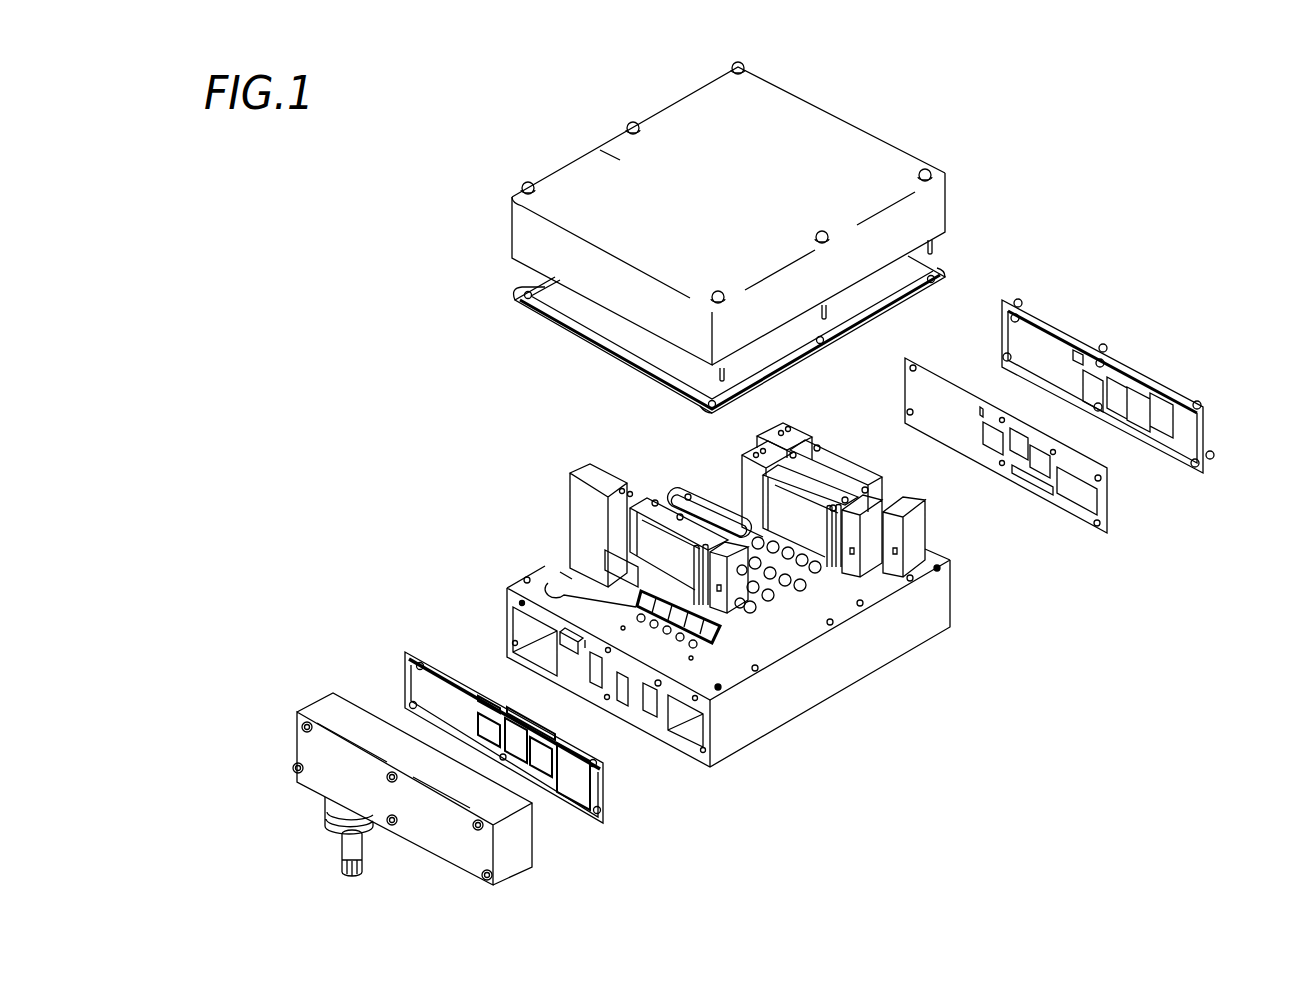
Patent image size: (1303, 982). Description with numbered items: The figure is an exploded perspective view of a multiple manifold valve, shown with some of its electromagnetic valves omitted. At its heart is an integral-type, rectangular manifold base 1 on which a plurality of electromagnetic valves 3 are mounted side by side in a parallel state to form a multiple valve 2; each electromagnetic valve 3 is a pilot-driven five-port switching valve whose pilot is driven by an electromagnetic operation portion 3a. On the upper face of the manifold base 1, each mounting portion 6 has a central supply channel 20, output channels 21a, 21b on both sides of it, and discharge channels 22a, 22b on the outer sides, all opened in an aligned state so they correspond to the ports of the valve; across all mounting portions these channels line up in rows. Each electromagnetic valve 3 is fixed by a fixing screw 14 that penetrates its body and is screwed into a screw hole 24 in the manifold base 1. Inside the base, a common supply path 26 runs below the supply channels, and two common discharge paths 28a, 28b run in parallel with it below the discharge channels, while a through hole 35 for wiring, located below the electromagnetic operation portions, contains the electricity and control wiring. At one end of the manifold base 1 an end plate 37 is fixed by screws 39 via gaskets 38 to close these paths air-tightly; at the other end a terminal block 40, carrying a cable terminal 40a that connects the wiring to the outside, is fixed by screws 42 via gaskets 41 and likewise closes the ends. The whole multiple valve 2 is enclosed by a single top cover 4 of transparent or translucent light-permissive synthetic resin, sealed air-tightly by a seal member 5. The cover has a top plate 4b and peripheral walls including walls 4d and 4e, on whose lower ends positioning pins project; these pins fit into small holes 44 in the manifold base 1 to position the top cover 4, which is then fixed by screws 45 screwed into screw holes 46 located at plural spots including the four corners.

The manifold base 1 is at (730, 663).
The multiple valve 2 is at (537, 467).
The electromagnetic valve 3 is at (740, 489).
The electromagnetic operation portion 3a is at (588, 472).
The top cover 4 is at (735, 219).
The top plate 4b is at (875, 162).
The peripheral wall 4d is at (900, 225).
The peripheral wall 4e is at (538, 242).
The seal member 5 is at (550, 323).
The mounting portion 6 is at (837, 580).
The fixing screw 14 is at (795, 453).
The supply channel 20 is at (784, 580).
The output channel 21a is at (768, 578).
The output channel 21b is at (800, 577).
The discharge channel 22a is at (752, 575).
The discharge channel 22b is at (815, 572).
The screw hole 24 is at (747, 510).
The common supply path 26 is at (622, 690).
The common discharge path 28a is at (598, 667).
The common discharge path 28b is at (650, 695).
The through hole for wiring 35 is at (537, 628).
The end plate 37 is at (1140, 368).
The gasket 38 is at (952, 374).
The screw 39 is at (1022, 302).
The terminal block 40 is at (370, 756).
The cable terminal 40a is at (328, 814).
The gasket 41 is at (408, 650).
The screw 42 is at (293, 766).
The small hole 44 is at (527, 578).
The screw 45 is at (526, 182).
The screw hole 46 is at (521, 601).